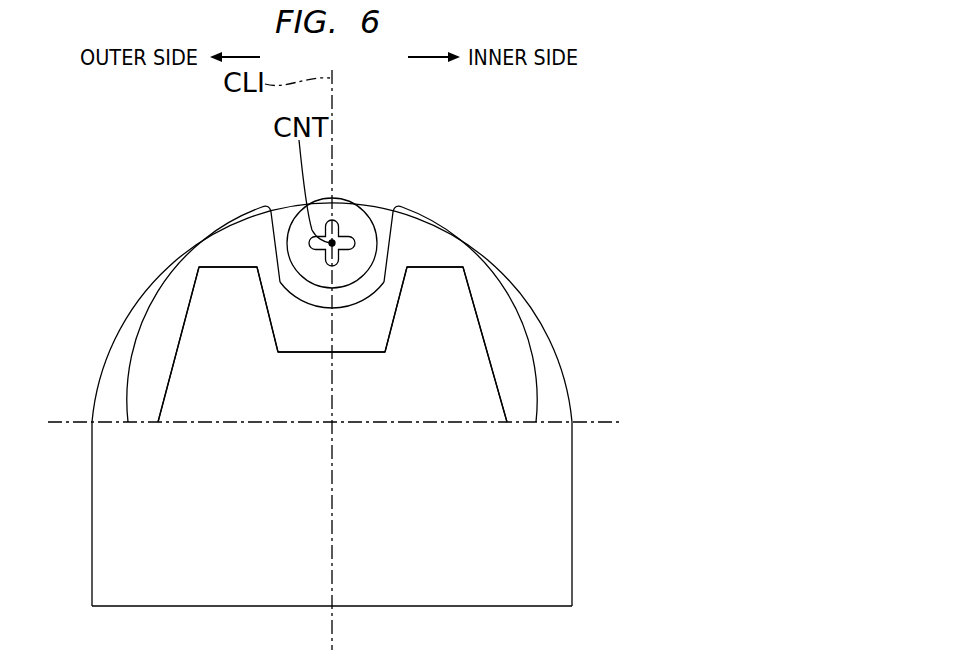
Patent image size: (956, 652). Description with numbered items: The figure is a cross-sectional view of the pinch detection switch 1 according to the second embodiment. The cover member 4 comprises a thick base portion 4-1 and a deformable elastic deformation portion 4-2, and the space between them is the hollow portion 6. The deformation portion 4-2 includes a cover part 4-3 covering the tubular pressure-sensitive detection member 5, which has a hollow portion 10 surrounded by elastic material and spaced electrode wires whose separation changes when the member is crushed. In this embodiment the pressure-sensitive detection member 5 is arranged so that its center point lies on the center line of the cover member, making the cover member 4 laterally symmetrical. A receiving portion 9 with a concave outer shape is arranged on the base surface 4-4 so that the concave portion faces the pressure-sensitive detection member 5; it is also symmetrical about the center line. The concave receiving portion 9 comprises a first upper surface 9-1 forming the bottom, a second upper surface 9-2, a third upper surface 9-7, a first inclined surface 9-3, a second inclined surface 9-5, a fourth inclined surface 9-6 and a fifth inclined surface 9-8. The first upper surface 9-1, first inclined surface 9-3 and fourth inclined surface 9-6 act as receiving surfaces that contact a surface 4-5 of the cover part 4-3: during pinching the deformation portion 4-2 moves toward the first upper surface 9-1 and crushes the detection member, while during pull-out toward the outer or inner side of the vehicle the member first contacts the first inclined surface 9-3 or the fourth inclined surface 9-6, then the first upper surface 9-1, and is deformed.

The pinch detection switch 1 is at (646, 307).
The cover member 4 is at (573, 381).
The base portion 4-1 is at (556, 526).
The deformation portion 4-2 is at (435, 188).
The cover part 4-3 is at (362, 258).
The base surface 4-4 is at (608, 422).
The surface of the cover part 4-5 is at (348, 312).
The pressure-sensitive detection member 5 is at (348, 286).
The hollow portion 6 is at (172, 295).
The receiving portion 9 is at (193, 381).
The first upper surface 9-1 is at (316, 348).
The second upper surface 9-2 is at (218, 257).
The first inclined surface 9-3 is at (271, 297).
The second inclined surface 9-5 is at (167, 350).
The fourth inclined surface 9-6 is at (378, 335).
The third upper surface 9-7 is at (441, 259).
The fifth inclined surface 9-8 is at (494, 330).
The hollow portion 10 is at (357, 218).